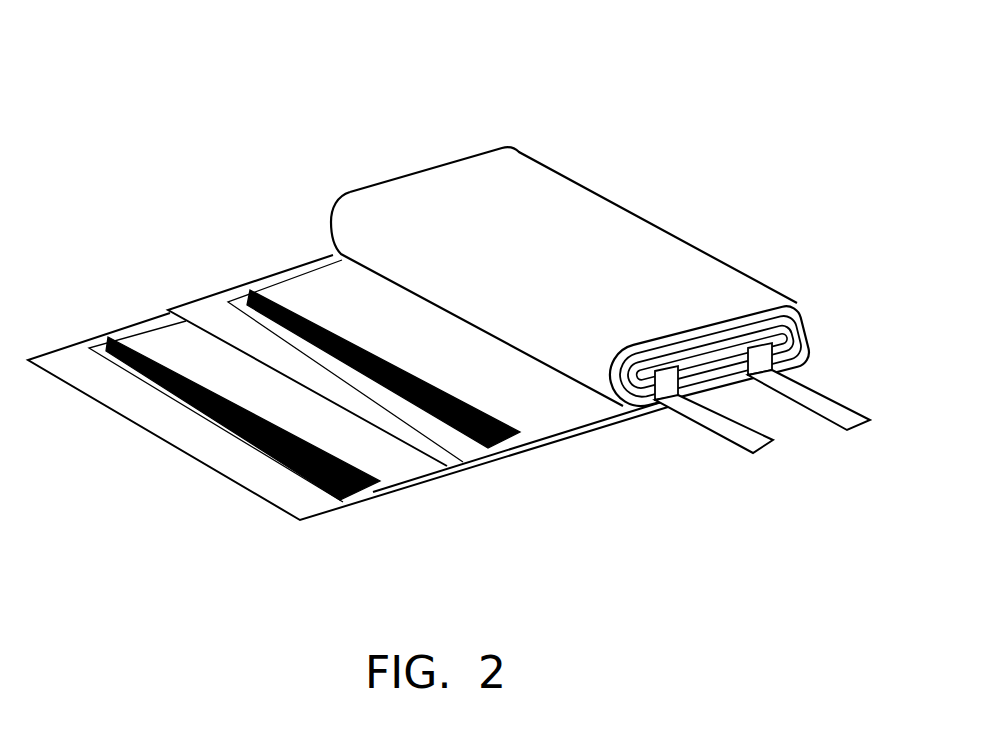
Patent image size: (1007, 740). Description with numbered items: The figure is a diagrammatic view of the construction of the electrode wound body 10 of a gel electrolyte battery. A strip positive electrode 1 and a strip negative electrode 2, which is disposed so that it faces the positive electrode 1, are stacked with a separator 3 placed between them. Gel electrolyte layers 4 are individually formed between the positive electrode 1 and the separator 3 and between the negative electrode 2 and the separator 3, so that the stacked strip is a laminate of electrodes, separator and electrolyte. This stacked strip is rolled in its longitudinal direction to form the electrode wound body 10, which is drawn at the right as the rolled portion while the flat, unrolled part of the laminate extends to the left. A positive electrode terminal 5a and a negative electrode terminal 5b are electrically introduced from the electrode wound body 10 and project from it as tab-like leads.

The positive electrode 1 is at (513, 448).
The negative electrode 2 is at (378, 494).
The separator 3 is at (318, 505).
The gel electrolyte layers 4 is at (152, 333).
The positive electrode terminal 5a is at (868, 423).
The negative electrode terminal 5b is at (770, 447).
The electrode wound body 10 is at (561, 170).